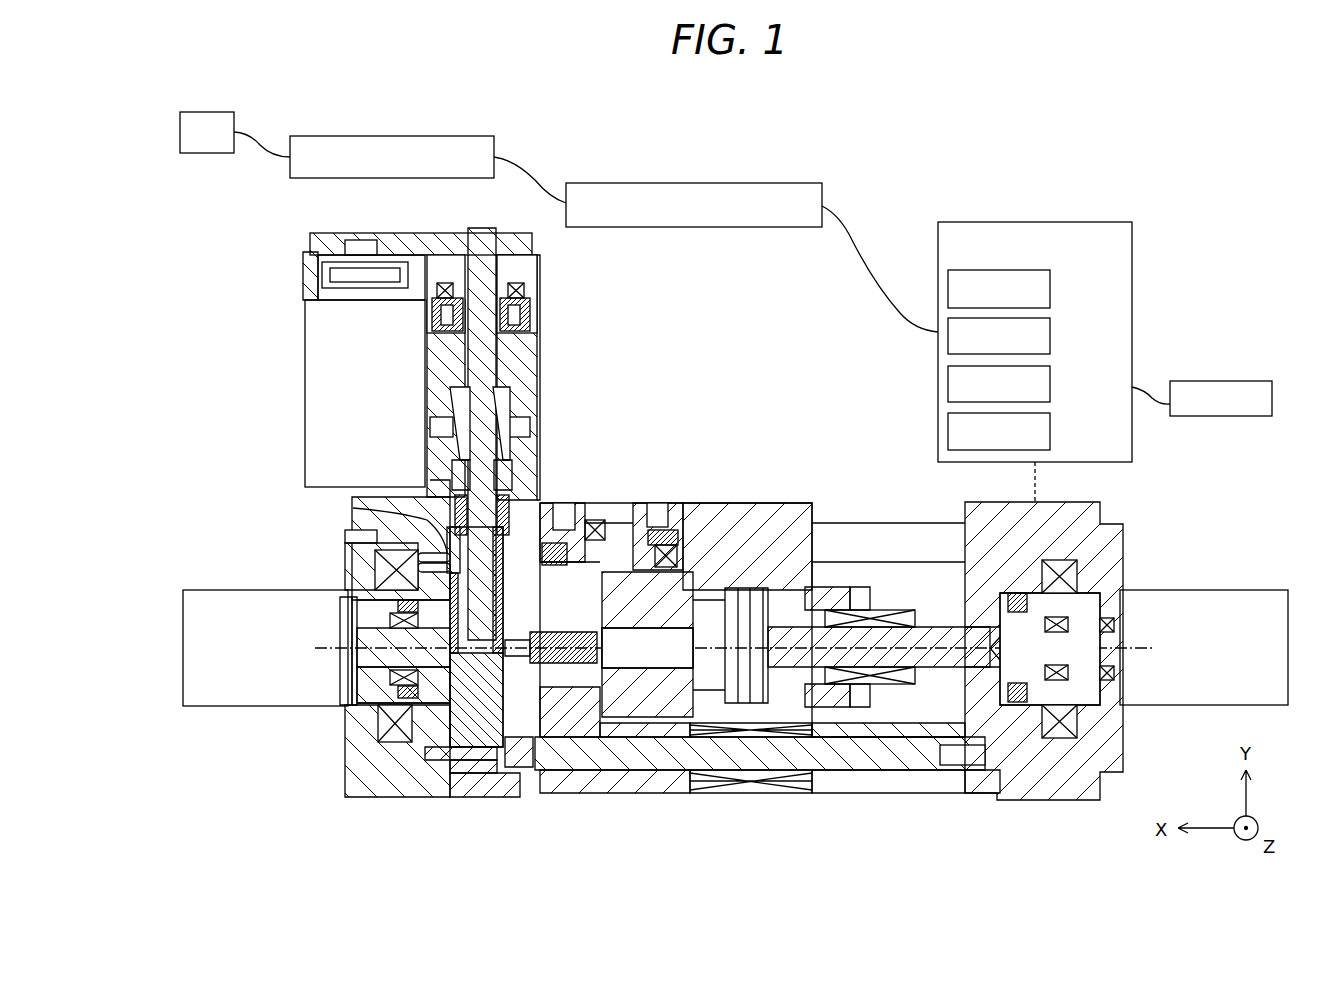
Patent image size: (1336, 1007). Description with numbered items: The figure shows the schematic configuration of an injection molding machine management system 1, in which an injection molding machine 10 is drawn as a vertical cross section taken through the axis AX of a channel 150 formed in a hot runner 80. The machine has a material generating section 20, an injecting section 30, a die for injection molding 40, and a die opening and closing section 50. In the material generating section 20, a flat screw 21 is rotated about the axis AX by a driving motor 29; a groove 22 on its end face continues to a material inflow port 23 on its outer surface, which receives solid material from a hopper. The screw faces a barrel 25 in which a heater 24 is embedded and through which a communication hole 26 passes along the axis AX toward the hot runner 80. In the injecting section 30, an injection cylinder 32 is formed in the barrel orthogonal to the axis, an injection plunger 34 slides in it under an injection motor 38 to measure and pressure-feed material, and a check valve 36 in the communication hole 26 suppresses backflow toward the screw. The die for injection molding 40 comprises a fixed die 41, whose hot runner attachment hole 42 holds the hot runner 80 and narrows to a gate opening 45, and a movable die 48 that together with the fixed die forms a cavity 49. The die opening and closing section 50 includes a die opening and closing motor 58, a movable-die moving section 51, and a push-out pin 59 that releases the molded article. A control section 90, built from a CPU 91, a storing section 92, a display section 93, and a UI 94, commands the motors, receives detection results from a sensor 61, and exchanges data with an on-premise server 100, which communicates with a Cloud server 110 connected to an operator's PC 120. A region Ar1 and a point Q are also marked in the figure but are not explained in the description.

The injection molding machine management system 1 is at (1242, 128).
The injection molding machine 10 is at (1180, 262).
The material generating section 20 is at (669, 668).
The flat screw 21 is at (378, 566).
The groove 22 is at (385, 770).
The material inflow port 23 is at (362, 510).
The heater 24 is at (440, 770).
The barrel 25 is at (482, 800).
The communication hole 26 is at (512, 773).
The driving motor 29 is at (250, 695).
The injecting section 30 is at (443, 434).
The injection cylinder 32 is at (512, 490).
The injection plunger 34 is at (505, 520).
The check valve 36 is at (520, 520).
The injection motor 38 is at (305, 390).
The die for injection molding 40 is at (662, 625).
The fixed die 41 is at (600, 560).
The hot runner attachment hole 42 is at (700, 560).
The gate opening 45 is at (626, 770).
The movable die 48 is at (640, 560).
The cavity 49 is at (655, 793).
The die opening and closing section 50 is at (911, 651).
The movable-die moving section 51 is at (772, 590).
The die opening and closing motor 58 is at (1170, 612).
The push-out pin 59 is at (690, 793).
The sensor 61 is at (1248, 381).
The hot runner 80 is at (600, 720).
The control section 90 is at (1035, 329).
The CPU 91 is at (1052, 290).
The storing section 92 is at (1052, 338).
The display section 93 is at (1052, 386).
The UI 94 is at (1052, 434).
The on-premise server 100 is at (786, 183).
The Cloud server 110 is at (450, 136).
The PC 120 is at (218, 112).
The channel 150 is at (575, 770).
The axis AX is at (325, 650).
The region Ar1 is at (755, 575).
The point Q is at (526, 705).